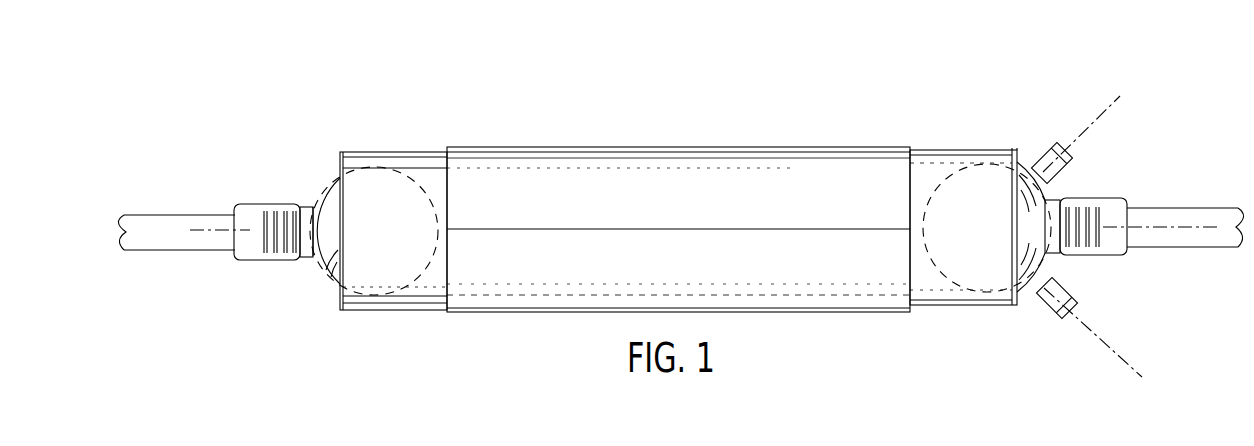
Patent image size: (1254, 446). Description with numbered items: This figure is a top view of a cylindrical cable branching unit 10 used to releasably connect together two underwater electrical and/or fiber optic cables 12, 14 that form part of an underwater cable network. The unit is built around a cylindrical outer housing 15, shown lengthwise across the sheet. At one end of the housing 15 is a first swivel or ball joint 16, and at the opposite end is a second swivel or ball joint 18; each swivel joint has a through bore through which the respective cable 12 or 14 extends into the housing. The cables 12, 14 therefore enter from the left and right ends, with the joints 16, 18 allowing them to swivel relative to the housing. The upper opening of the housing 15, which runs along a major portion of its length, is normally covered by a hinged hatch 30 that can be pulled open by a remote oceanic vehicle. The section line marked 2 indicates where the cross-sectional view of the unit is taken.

The cable branching unit 10 is at (713, 233).
The underwater cable 12 is at (168, 255).
The underwater cable 14 is at (1213, 248).
The cylindrical outer housing 15 is at (849, 290).
The first swivel or ball joint 16 is at (330, 186).
The second swivel or ball joint 18 is at (1030, 254).
The hinged hatch 30 is at (585, 160).
The section line 2- 2 is at (207, 240).